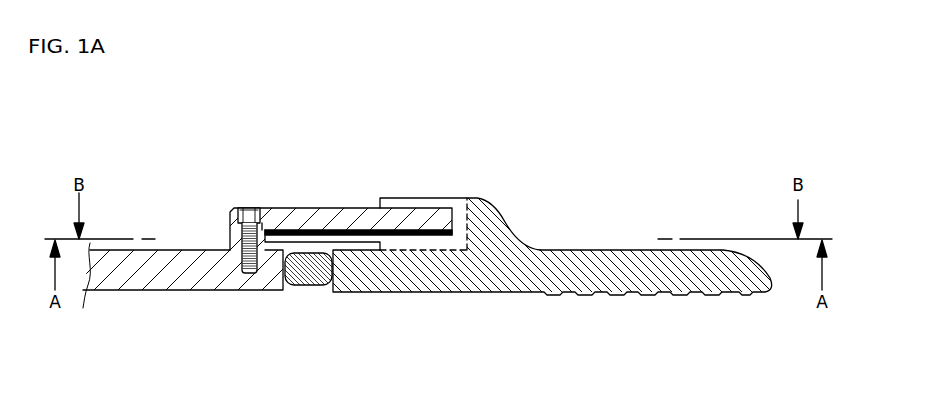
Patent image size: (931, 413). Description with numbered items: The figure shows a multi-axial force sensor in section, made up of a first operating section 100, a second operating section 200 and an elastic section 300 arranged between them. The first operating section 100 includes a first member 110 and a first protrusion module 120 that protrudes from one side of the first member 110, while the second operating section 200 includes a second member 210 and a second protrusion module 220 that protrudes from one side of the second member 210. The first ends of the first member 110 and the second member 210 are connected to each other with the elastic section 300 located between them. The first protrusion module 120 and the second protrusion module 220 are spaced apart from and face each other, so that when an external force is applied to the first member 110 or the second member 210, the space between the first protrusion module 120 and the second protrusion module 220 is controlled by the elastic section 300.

The first operating section 100 is at (268, 130).
The first member 110 is at (181, 250).
The first protrusion module 120 is at (275, 208).
The second operating section 200 is at (625, 152).
The second member 210 is at (573, 262).
The second protrusion module 220 is at (490, 207).
The elastic section 300 is at (312, 277).